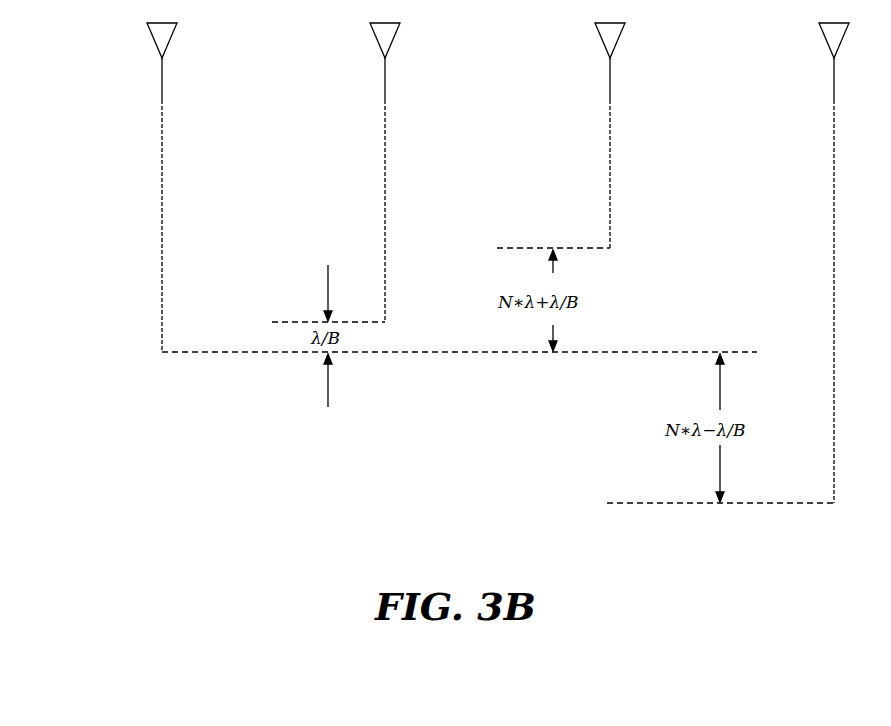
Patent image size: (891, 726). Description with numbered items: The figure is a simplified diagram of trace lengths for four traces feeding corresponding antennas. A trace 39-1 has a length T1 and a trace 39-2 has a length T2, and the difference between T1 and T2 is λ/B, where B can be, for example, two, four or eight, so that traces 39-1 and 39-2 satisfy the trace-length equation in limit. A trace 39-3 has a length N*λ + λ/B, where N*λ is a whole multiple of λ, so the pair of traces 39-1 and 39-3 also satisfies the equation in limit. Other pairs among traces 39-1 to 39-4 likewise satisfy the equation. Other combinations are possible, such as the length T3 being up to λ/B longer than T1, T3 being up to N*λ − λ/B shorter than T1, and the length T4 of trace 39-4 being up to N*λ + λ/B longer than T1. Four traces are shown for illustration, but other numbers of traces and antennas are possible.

The length of trace 39-1 T1 is at (162, 98).
The length of trace 39-2 T2 is at (385, 98).
The length of trace 39-3 T3 is at (610, 98).
The length of trace 39-4 T4 is at (834, 98).
The trace 39-1 is at (162, 182).
The trace 39-2 is at (385, 182).
The trace 39-3 is at (610, 182).
The trace 39-4 is at (834, 182).